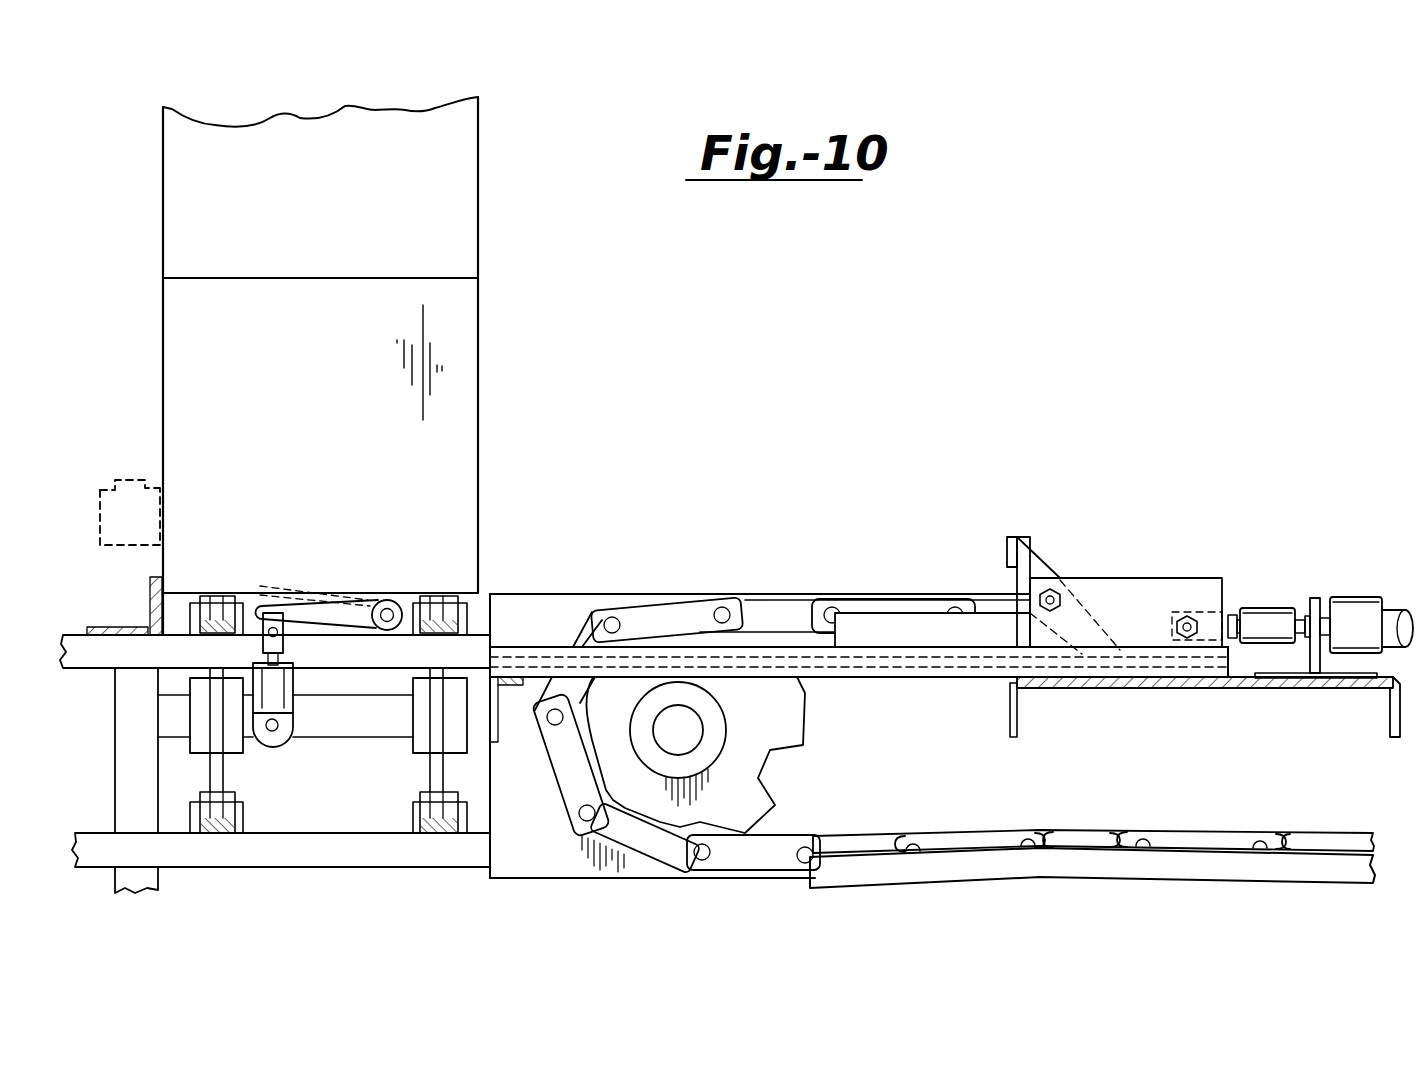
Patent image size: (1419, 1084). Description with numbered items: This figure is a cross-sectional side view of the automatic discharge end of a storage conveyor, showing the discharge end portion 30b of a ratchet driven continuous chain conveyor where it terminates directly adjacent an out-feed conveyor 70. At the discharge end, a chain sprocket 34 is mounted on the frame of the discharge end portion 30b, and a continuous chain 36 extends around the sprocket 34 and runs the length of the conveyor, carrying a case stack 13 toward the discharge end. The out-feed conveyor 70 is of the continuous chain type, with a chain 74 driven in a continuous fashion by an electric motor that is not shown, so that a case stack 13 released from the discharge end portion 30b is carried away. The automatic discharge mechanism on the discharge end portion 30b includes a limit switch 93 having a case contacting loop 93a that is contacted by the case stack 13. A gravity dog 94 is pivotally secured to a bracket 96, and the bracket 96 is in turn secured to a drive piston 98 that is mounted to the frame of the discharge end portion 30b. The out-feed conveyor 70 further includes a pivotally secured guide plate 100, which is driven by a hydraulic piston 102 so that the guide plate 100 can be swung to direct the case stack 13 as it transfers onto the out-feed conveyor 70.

The case stack 13 is at (480, 238).
The discharge end portion 30b is at (872, 566).
The chain sprocket 34 is at (808, 735).
The continuous chain 36 is at (978, 833).
The out-feed conveyor 70 is at (125, 604).
The chain 74 is at (240, 790).
The limit switch 93 is at (100, 510).
The case contacting loop 93a is at (117, 485).
The gravity dog 94 is at (990, 584).
The bracket 96 is at (1127, 582).
The drive piston 98 is at (1393, 608).
The guide plate 100 is at (340, 612).
The hydraulic piston 102 is at (294, 700).